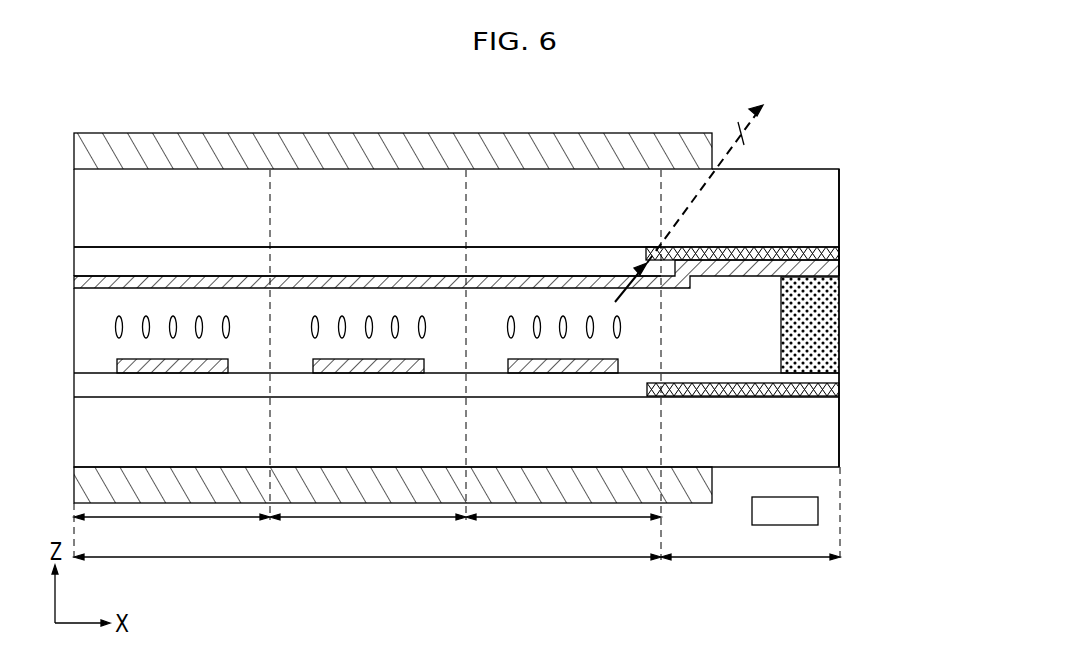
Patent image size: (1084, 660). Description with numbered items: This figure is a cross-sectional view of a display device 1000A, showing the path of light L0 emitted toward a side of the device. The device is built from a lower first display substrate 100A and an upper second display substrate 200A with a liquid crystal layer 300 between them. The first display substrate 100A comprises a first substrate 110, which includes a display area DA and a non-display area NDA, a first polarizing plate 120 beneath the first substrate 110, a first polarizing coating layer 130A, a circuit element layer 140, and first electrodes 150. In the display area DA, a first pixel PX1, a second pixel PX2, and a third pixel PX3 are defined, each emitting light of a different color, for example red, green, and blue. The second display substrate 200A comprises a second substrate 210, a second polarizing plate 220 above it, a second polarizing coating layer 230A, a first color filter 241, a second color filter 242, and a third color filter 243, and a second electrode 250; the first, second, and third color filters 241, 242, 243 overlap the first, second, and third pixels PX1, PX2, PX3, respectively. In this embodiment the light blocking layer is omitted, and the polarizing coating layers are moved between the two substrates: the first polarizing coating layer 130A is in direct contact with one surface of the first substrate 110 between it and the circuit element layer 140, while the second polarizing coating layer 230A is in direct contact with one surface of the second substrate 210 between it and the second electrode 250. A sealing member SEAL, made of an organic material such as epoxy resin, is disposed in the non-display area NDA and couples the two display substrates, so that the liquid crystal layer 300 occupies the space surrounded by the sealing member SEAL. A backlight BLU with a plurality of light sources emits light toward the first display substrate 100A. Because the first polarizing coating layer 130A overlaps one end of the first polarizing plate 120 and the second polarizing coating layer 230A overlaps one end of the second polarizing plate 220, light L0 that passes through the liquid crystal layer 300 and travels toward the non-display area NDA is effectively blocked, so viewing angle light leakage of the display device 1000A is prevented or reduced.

The display device 1000A is at (848, 137).
The second display substrate 200A is at (899, 130).
The first display substrate 100A is at (899, 343).
The second polarizing plate 220 is at (645, 138).
The second substrate 210 is at (833, 199).
The first color filter 241 is at (189, 262).
The second color filter 242 is at (386, 263).
The third color filter 243 is at (552, 263).
The second polarizing coating layer 230A is at (839, 253).
The second electrode 250 is at (840, 268).
The liquid crystal layer 300 is at (653, 316).
The sealing member SEAL is at (835, 325).
The first electrodes 150 is at (608, 363).
The circuit element layer 140 is at (835, 377).
The first polarizing coating layer 130A is at (837, 390).
The first substrate 110 is at (835, 425).
The first polarizing plate 120 is at (712, 490).
The backlight BLU is at (818, 508).
The light L0 is at (689, 203).
The first pixel PX1 is at (172, 531).
The second pixel PX2 is at (368, 531).
The third pixel PX3 is at (563, 531).
The display area DA is at (367, 571).
The non-display area NDA is at (750, 571).